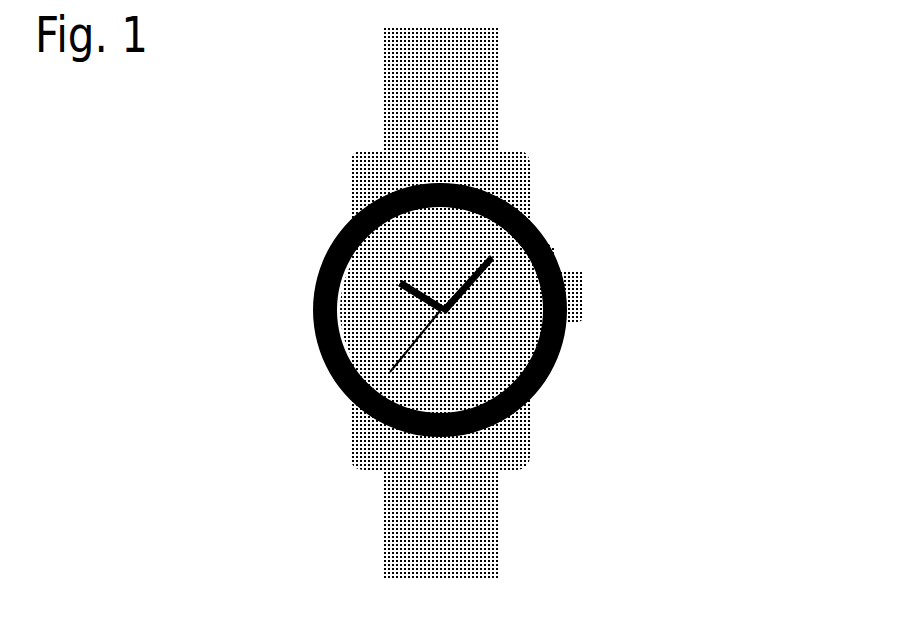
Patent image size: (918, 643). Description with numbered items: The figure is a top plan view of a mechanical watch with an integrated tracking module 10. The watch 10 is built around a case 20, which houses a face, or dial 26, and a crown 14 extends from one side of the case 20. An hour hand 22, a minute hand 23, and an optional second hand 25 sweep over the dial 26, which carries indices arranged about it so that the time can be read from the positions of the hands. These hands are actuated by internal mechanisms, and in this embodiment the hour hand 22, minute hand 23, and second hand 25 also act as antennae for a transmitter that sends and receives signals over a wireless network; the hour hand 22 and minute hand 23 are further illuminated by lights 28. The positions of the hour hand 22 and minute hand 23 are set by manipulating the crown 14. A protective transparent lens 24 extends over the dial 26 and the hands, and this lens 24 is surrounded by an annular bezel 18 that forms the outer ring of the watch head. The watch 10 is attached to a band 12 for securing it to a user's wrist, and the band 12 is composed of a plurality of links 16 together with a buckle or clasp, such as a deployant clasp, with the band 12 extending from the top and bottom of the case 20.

The mechanical watch with an integrated tracking module 10 is at (462, 296).
The band 12 is at (386, 296).
The crown 14 is at (590, 310).
The links 16 is at (380, 127).
The annular bezel 18 is at (530, 393).
The case 20 is at (300, 282).
The hour hand 22 is at (410, 282).
The minute hand 23 is at (462, 290).
The protective transparent lens 24 is at (560, 228).
The second hand 25 is at (367, 385).
The dial 26 is at (357, 343).
The lights 28 is at (439, 222).